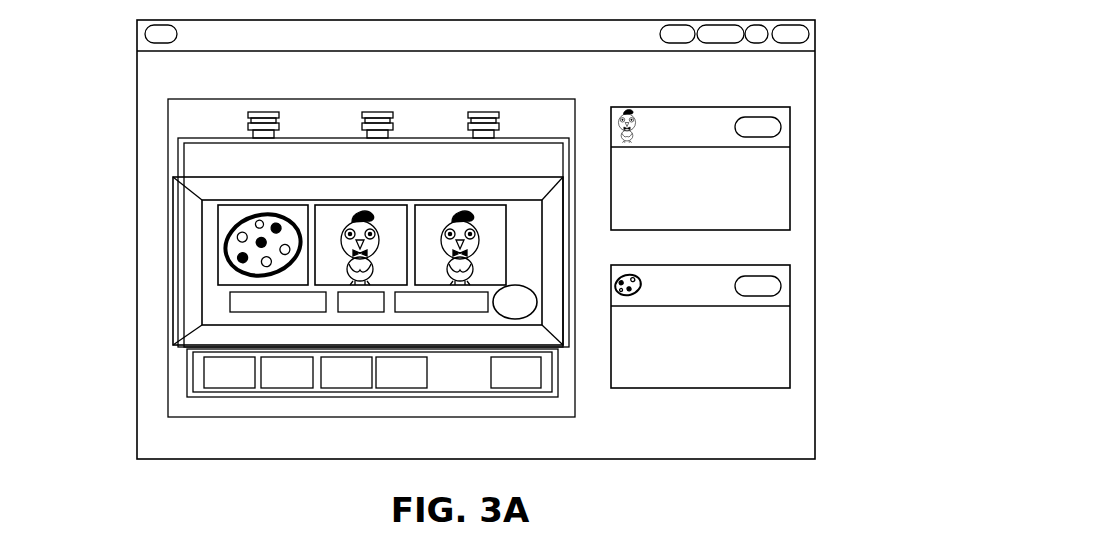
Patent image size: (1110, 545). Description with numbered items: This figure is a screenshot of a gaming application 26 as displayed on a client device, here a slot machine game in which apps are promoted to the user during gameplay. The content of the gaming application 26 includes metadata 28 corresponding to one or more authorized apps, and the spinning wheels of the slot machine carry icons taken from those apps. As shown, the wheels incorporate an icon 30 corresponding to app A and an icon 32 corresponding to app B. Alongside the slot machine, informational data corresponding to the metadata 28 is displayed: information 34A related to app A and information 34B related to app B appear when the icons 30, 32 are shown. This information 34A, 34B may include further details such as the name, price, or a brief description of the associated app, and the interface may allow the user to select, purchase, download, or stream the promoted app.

The gaming application 26 is at (124, 78).
The metadata 28 is at (437, 196).
The icon 30 is at (487, 260).
The icon 32 is at (233, 267).
The information 34A is at (772, 103).
The information 34B is at (772, 262).